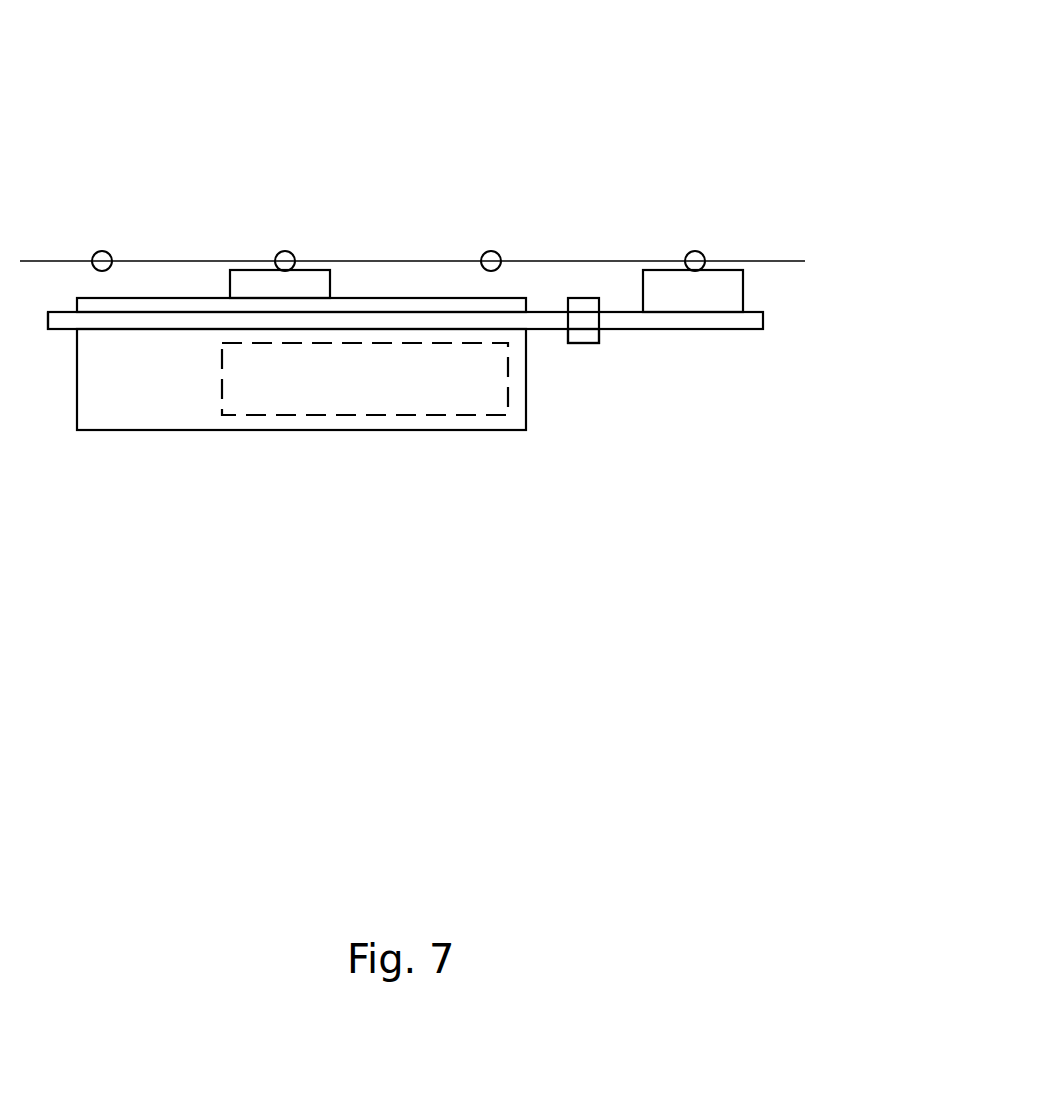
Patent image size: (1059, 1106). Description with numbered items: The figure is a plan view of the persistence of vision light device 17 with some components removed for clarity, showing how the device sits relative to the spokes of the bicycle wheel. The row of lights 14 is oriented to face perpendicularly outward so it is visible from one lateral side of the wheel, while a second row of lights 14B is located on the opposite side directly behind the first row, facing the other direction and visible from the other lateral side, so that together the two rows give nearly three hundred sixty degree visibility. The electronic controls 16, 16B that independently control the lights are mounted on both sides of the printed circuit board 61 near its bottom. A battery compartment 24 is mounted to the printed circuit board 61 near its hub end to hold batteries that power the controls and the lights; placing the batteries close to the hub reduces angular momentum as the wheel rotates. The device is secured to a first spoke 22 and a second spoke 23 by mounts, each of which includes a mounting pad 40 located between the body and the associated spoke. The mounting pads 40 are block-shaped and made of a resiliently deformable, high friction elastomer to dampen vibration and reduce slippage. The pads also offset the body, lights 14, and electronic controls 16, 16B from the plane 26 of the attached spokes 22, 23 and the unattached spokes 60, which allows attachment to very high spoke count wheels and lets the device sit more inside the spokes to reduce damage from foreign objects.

The row of lights 14 is at (583, 298).
The second row of lights 14B is at (583, 343).
The electronic controls 16 is at (193, 298).
The electronic controls 16B is at (352, 430).
The light device 17 is at (382, 283).
The first spoke 22 is at (695, 251).
The second spoke 23 is at (285, 251).
The battery compartment 24 is at (467, 417).
The plane of the spokes 26 is at (756, 261).
The mounting pad 40 is at (250, 270).
The unattached spokes 60 is at (102, 251).
The printed circuit board 61 is at (63, 329).